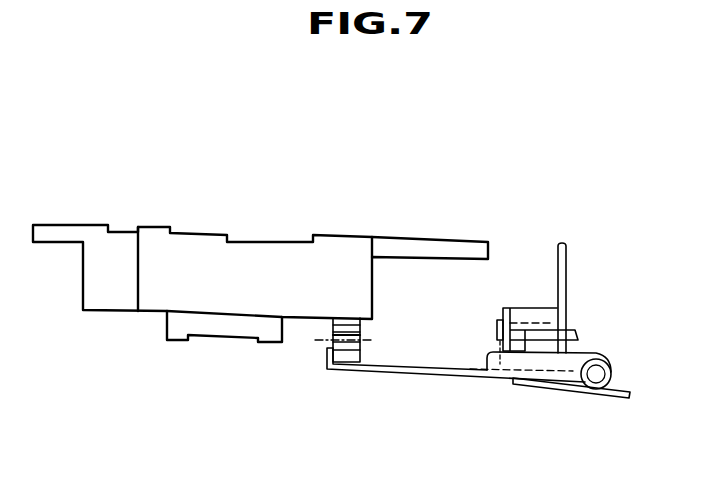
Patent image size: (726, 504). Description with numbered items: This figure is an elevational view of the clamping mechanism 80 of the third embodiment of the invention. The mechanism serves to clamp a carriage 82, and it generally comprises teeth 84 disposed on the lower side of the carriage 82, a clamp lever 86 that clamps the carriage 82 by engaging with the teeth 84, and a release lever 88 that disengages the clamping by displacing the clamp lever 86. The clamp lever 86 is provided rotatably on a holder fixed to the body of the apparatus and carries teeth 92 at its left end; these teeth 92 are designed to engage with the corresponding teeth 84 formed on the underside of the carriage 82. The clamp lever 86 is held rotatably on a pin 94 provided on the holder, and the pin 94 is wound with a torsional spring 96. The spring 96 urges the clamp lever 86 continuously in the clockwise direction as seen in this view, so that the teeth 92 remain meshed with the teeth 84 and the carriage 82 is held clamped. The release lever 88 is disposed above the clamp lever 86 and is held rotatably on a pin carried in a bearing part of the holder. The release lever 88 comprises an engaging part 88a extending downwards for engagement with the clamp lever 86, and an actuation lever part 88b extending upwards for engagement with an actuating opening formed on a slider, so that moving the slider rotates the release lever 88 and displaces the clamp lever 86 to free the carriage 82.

The clamping mechanism 80 is at (440, 183).
The carriage 82 is at (257, 270).
The teeth 84 is at (358, 330).
The clamp lever 86 is at (442, 377).
The release lever 88 is at (567, 282).
The engaging part 88a is at (490, 348).
The actuation lever part 88b is at (568, 253).
The teeth 92 is at (362, 339).
The pin 94 is at (598, 372).
The torsional spring 96 is at (573, 398).